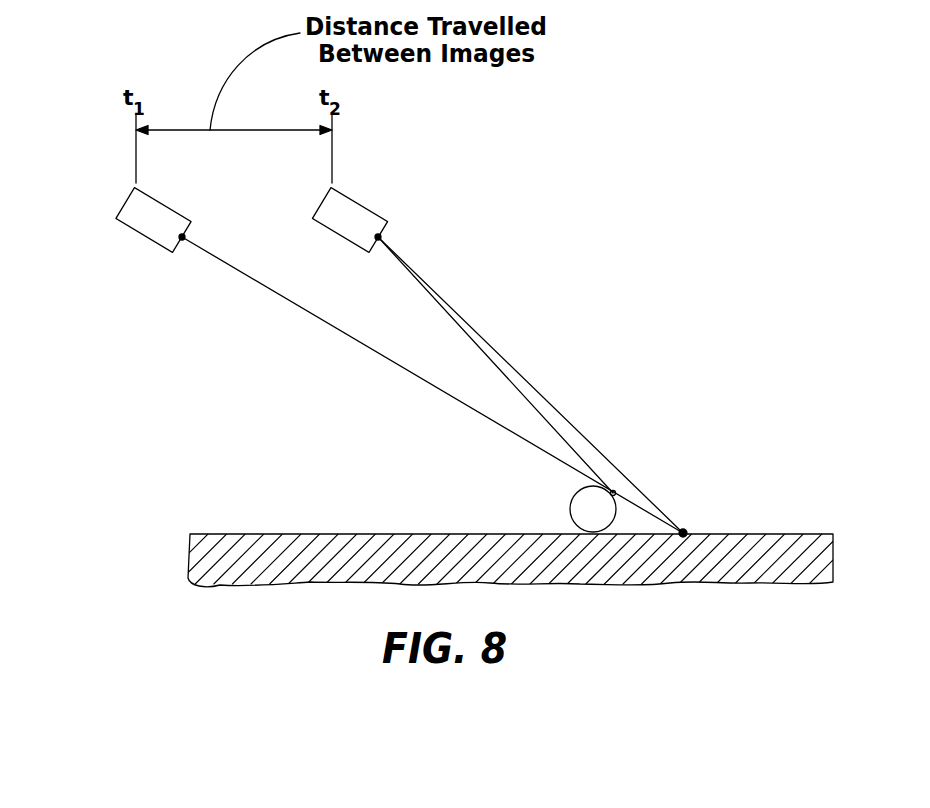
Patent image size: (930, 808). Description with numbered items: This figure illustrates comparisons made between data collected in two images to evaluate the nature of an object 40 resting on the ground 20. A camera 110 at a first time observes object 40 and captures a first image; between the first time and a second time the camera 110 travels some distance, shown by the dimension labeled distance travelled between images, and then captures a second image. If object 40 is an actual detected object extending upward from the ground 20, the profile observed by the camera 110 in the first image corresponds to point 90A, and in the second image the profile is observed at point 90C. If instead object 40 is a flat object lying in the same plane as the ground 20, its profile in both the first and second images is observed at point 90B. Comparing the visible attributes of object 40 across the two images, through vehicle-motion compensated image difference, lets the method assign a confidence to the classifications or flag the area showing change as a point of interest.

The camera 110 is at (252, 279).
The ground 20 is at (508, 514).
The object 40 is at (644, 564).
The point 90A is at (654, 426).
The point 90B is at (740, 488).
The point 90C is at (559, 365).